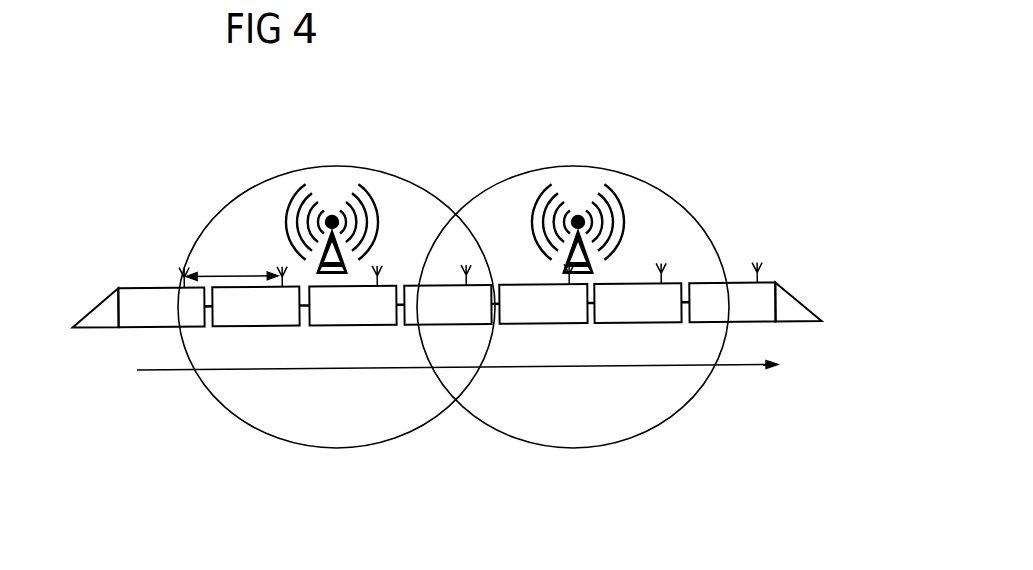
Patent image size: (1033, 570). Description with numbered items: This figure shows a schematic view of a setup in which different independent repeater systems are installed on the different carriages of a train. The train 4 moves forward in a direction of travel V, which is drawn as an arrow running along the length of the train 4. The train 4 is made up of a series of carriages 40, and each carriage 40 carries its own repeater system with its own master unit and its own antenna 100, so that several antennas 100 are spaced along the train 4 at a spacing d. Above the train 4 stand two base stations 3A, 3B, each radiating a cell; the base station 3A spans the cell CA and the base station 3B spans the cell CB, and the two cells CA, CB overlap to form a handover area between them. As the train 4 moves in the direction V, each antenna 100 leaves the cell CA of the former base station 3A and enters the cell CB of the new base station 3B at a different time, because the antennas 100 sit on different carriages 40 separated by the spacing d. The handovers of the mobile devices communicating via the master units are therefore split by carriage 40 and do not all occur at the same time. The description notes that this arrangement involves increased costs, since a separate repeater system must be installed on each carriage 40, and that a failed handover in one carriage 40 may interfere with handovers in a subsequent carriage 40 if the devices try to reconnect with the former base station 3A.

The train 4 is at (446, 294).
The carriage 40 is at (141, 300).
The antenna 100 is at (668, 266).
The base station 3A is at (323, 185).
The base station 3B is at (579, 178).
The cell CA is at (309, 448).
The cell CB is at (596, 447).
The distance between antennas d is at (232, 266).
The direction of travel V is at (380, 370).